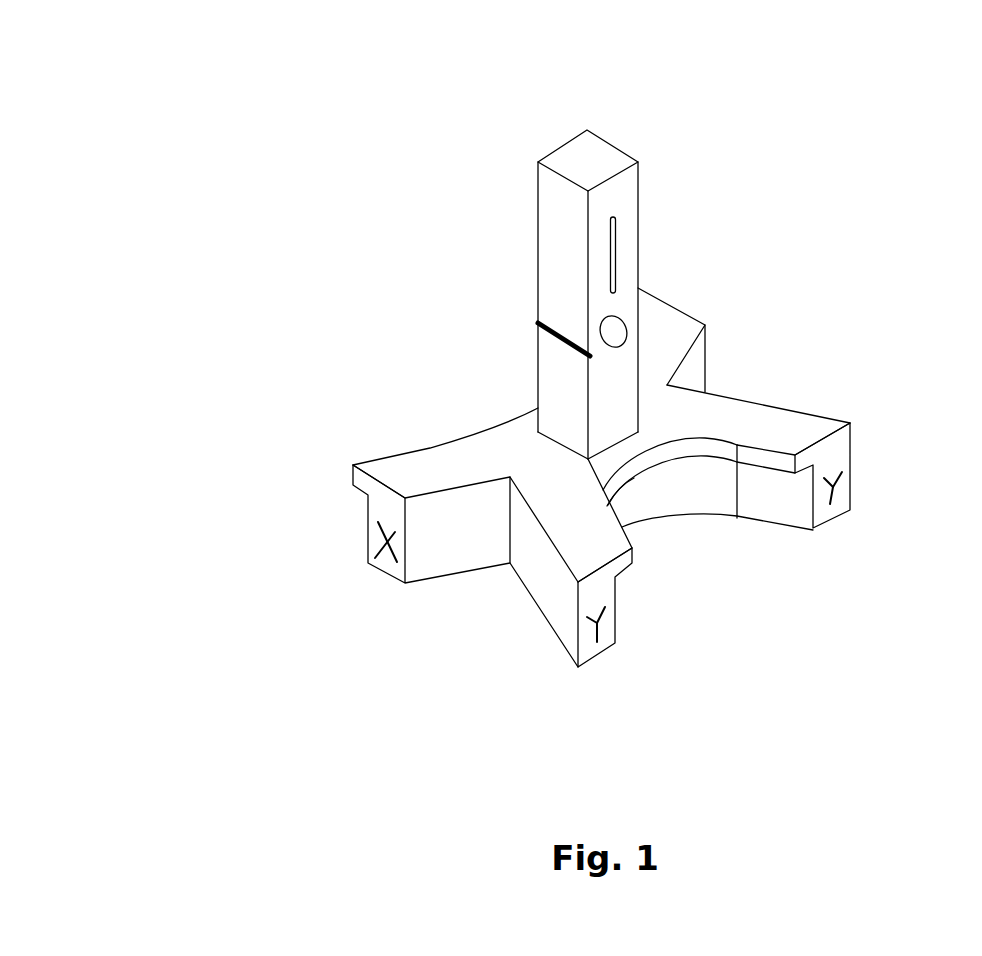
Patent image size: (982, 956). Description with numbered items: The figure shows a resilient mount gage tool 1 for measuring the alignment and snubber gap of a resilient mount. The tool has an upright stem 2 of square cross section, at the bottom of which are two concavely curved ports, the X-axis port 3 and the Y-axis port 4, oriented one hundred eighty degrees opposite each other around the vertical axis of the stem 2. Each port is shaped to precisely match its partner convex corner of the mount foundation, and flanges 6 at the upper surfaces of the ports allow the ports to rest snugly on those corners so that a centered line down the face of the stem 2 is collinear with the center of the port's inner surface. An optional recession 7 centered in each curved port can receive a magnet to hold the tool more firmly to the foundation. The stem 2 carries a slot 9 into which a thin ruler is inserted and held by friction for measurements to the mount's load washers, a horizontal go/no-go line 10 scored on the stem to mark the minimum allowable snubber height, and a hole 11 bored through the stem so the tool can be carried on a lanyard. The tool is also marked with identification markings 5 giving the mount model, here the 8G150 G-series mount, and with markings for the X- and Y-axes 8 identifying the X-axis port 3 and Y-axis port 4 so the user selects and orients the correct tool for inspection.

The gage tool 1 is at (534, 127).
The upright stem 2 is at (568, 230).
The X-axis port 3 is at (487, 427).
The Y-axis port 4 is at (700, 478).
The identification markings 5 is at (548, 510).
The flanges 6 is at (357, 478).
The recession 7 is at (622, 498).
The X- and Y-axes markings 8 is at (383, 543).
The slot 9 is at (618, 243).
The go/no-go line 10 is at (538, 323).
The hole 11 is at (613, 329).